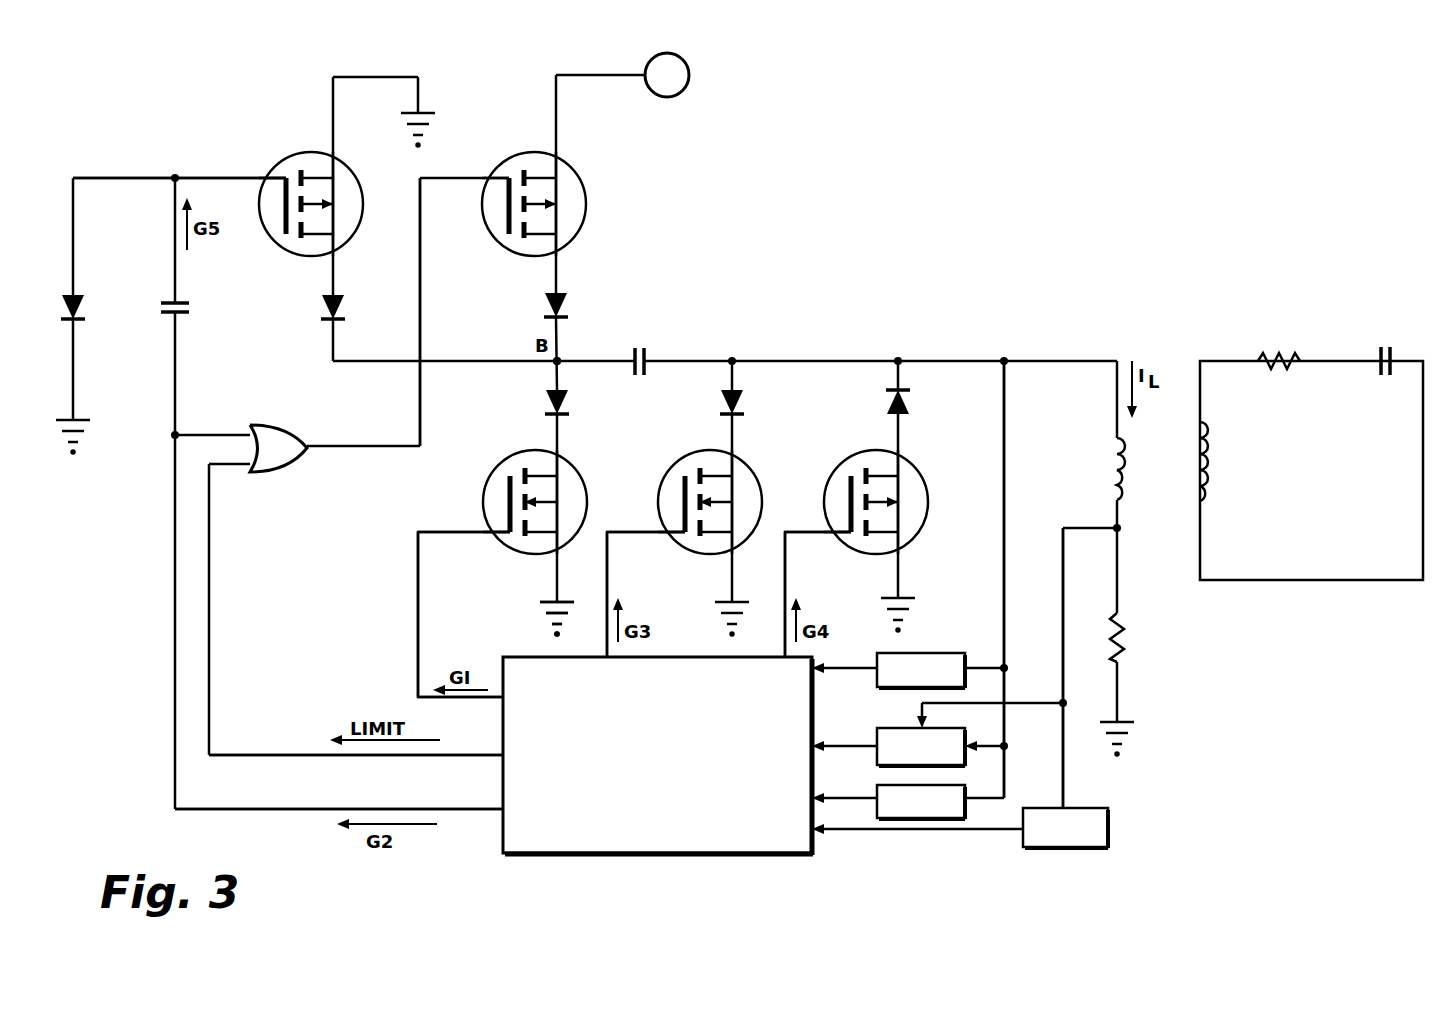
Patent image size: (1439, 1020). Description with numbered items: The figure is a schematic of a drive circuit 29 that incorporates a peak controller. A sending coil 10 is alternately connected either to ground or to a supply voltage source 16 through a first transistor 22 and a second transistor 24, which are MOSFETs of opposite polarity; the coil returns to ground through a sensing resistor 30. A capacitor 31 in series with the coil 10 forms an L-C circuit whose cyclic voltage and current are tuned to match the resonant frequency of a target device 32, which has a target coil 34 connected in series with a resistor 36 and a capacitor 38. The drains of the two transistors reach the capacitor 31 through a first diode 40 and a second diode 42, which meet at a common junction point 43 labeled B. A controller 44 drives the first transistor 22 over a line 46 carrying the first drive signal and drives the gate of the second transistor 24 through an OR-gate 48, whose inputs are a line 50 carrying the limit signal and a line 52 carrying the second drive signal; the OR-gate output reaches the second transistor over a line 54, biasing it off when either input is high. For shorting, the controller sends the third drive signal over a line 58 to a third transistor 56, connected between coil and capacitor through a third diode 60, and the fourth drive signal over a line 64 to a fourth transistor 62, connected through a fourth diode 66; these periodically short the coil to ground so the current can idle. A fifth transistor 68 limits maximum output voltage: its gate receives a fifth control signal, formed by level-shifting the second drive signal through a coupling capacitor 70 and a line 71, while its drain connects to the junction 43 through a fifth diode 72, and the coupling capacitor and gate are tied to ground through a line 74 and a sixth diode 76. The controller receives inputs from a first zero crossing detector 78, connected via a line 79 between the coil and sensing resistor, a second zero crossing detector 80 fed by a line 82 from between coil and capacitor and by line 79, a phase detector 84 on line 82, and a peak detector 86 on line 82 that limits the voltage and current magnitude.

The sending coil 10 is at (1125, 462).
The supply voltage source 16 is at (695, 78).
The first transistor 22 is at (582, 487).
The second transistor 24 is at (582, 195).
The drive circuit 29 is at (810, 182).
The sensing resistor 30 is at (1122, 626).
The capacitor 31 is at (648, 357).
The target device 32 is at (1277, 292).
The target coil 34 is at (1215, 456).
The resistor 36 is at (1290, 368).
The capacitor 38 is at (1382, 370).
The first diode 40 is at (546, 400).
The second diode 42 is at (566, 318).
The common junction point 43 is at (563, 360).
The controller 44 is at (775, 854).
The line 46 is at (418, 572).
The OR-gate 48 is at (300, 441).
The line 50 is at (282, 733).
The line 52 is at (288, 790).
The line 54 is at (420, 300).
The third transistor 56 is at (755, 487).
The line 58 is at (609, 598).
The third diode 60 is at (742, 396).
The fourth transistor 62 is at (912, 478).
The line 64 is at (786, 598).
The fourth diode 66 is at (908, 390).
The fifth transistor 68 is at (352, 190).
The coupling capacitor 70 is at (175, 303).
The line 71 is at (228, 178).
The fifth diode 72 is at (322, 320).
The line 74 is at (135, 178).
The sixth diode 76 is at (73, 320).
The first zero crossing detector 78 is at (1095, 808).
The line 79 is at (1068, 528).
The second zero crossing detector 80 is at (877, 742).
The line 82 is at (1005, 470).
The phase detector 84 is at (940, 653).
The peak detector 86 is at (965, 797).